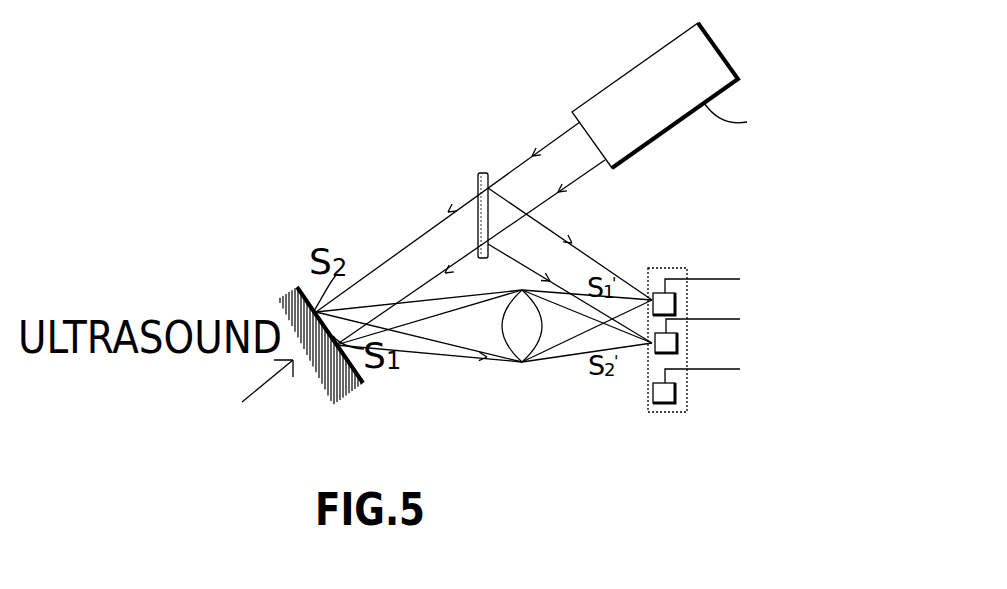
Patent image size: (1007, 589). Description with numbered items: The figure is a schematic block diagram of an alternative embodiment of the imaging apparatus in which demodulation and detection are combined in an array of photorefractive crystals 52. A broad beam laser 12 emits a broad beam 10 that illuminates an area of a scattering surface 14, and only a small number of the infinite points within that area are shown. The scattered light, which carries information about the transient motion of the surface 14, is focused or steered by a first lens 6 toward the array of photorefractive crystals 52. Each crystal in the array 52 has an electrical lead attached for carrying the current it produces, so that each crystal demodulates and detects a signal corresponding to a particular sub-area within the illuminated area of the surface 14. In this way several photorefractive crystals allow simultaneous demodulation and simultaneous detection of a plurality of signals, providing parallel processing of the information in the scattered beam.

The broad beam laser 12 is at (597, 93).
The broad beam 10 is at (408, 241).
The scattering surface 14 is at (287, 298).
The first lens 6 is at (523, 363).
The array of photorefractive crystals 52 is at (668, 268).